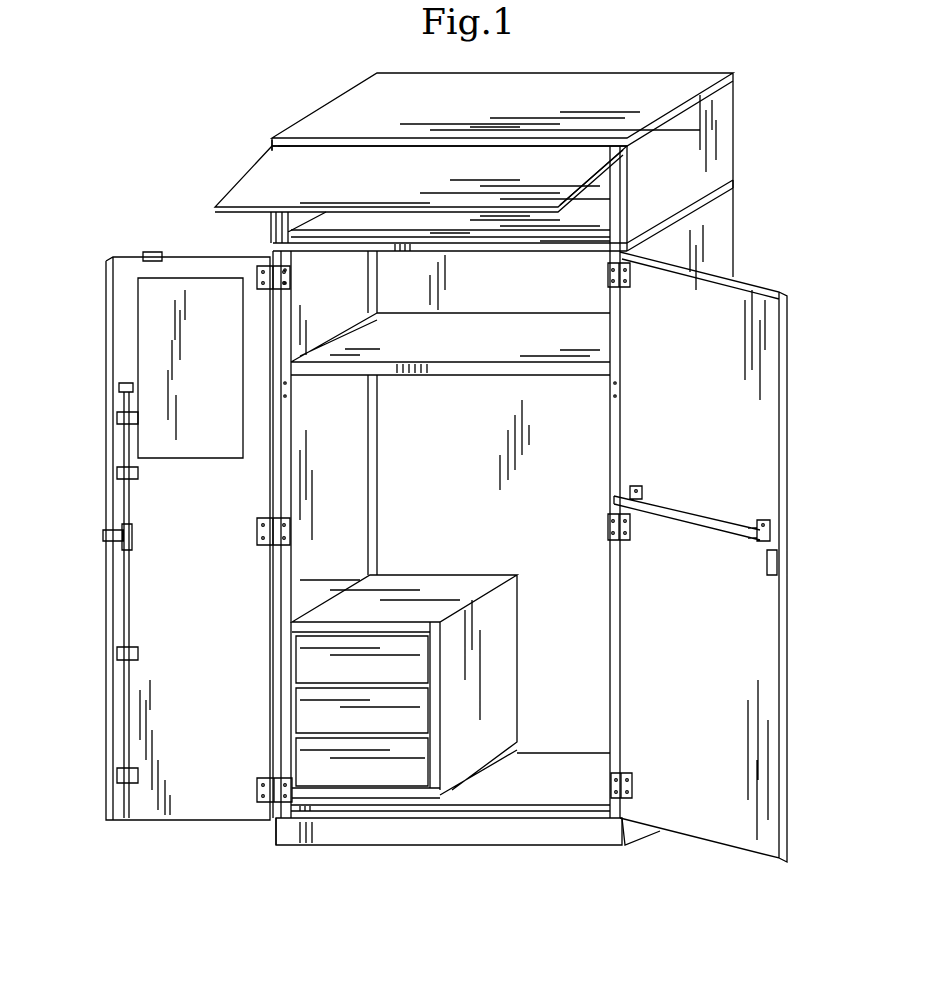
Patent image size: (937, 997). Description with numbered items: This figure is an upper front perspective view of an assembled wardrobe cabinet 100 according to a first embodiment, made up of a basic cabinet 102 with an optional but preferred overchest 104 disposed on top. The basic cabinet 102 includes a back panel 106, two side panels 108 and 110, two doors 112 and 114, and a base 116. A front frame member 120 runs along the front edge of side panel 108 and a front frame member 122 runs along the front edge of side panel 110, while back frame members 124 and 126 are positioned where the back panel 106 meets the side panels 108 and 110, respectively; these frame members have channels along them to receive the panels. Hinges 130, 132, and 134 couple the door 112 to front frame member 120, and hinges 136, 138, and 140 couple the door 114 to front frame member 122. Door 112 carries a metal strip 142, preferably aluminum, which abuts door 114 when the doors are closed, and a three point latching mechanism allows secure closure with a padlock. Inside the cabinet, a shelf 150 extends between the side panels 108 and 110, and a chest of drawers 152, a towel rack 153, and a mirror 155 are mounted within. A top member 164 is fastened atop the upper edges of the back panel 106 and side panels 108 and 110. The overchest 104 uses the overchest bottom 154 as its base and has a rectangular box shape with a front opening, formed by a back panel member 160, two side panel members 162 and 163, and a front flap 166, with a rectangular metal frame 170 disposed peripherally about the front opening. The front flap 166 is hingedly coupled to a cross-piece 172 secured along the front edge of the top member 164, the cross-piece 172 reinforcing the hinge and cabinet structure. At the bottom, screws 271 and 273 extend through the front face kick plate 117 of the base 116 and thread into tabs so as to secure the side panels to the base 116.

The wardrobe cabinet 100 is at (760, 188).
The basic cabinet 102 is at (738, 244).
The overchest 104 is at (727, 123).
The back panel 106 is at (438, 454).
The side panel 108 is at (323, 281).
The side panel 110 is at (716, 226).
The door 112 is at (170, 596).
The door 114 is at (673, 626).
The base 116 is at (490, 846).
The front face kick plate 117 is at (403, 836).
The front frame member 120 is at (289, 426).
The front frame member 122 is at (616, 421).
The back frame member 124 is at (378, 405).
The back frame member 126 is at (738, 263).
The hinge 130 is at (290, 281).
The hinge 132 is at (292, 532).
The hinge 134 is at (256, 781).
The hinge 136 is at (631, 281).
The hinge 138 is at (632, 531).
The hinge 140 is at (632, 778).
The metal strip 142 is at (106, 585).
The shelf 150 is at (438, 346).
The chest of drawers 152 is at (495, 648).
The towel rack 153 is at (661, 505).
The overchest bottom 154 is at (736, 181).
The mirror 155 is at (150, 326).
The back panel member 160 is at (604, 174).
The side panel member 162 is at (272, 229).
The side panel member 163 is at (631, 182).
The top member 164 is at (438, 109).
The front flap 166 is at (355, 189).
The rectangular metal frame 170 is at (612, 200).
The cross-piece 172 is at (283, 144).
The screw 271 is at (282, 838).
The screw 273 is at (617, 836).